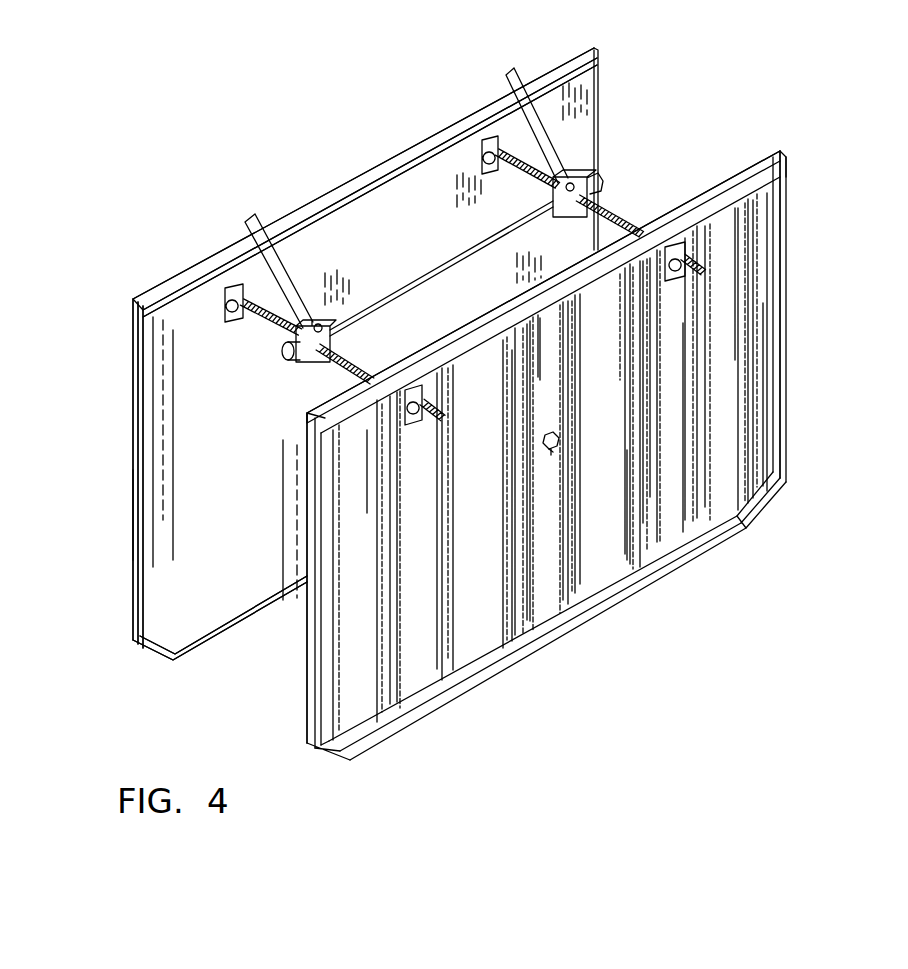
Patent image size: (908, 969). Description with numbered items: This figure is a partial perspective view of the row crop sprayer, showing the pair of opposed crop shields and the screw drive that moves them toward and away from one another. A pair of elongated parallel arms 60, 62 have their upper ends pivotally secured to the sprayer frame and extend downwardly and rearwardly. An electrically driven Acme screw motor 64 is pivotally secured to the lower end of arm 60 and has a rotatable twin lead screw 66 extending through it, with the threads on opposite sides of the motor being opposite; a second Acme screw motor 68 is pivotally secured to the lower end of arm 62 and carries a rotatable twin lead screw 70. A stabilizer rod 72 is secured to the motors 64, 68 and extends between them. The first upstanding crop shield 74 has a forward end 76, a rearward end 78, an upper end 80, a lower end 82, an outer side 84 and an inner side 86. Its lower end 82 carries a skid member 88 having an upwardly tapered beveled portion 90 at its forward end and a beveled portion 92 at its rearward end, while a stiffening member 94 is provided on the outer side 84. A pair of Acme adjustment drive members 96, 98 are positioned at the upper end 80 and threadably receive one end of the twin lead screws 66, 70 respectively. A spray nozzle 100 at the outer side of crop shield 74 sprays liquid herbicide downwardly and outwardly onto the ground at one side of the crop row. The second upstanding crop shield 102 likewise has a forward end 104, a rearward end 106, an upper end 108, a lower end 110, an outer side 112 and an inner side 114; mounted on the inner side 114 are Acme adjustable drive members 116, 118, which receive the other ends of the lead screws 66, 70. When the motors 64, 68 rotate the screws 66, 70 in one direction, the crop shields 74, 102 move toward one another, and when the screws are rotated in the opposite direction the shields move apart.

The arm 60 is at (275, 253).
The arm 62 is at (550, 137).
The Acme screw motor 64 is at (290, 360).
The twin lead screw 66 is at (320, 364).
The Acme screw motor 68 is at (600, 165).
The twin lead screw 70 is at (607, 230).
The stabilizer rod 72 is at (467, 250).
The first upstanding crop shield 74 is at (808, 284).
The forward end 76 is at (297, 655).
The rearward end 78 is at (783, 407).
The upper end 80 is at (733, 173).
The lower end 82 is at (627, 553).
The outer side 84 is at (590, 440).
The inner side 86 is at (293, 533).
The skid member 88 is at (485, 680).
The beveled portion 90 is at (340, 757).
The beveled portion 92 is at (760, 510).
The stiffening member 94 is at (700, 343).
The Acme adjustment drive member 96 is at (423, 390).
The Acme adjustment drive member 98 is at (697, 242).
The spray nozzle 100 is at (558, 452).
The second upstanding crop shield 102 is at (362, 148).
The forward end 104 is at (140, 462).
The rearward end 106 is at (600, 78).
The upper end 108 is at (227, 250).
The lower end 110 is at (222, 632).
The outer side 112 is at (123, 512).
The inner side 114 is at (208, 500).
The Acme adjustable drive member 116 is at (220, 303).
The Acme adjustable drive member 118 is at (487, 145).